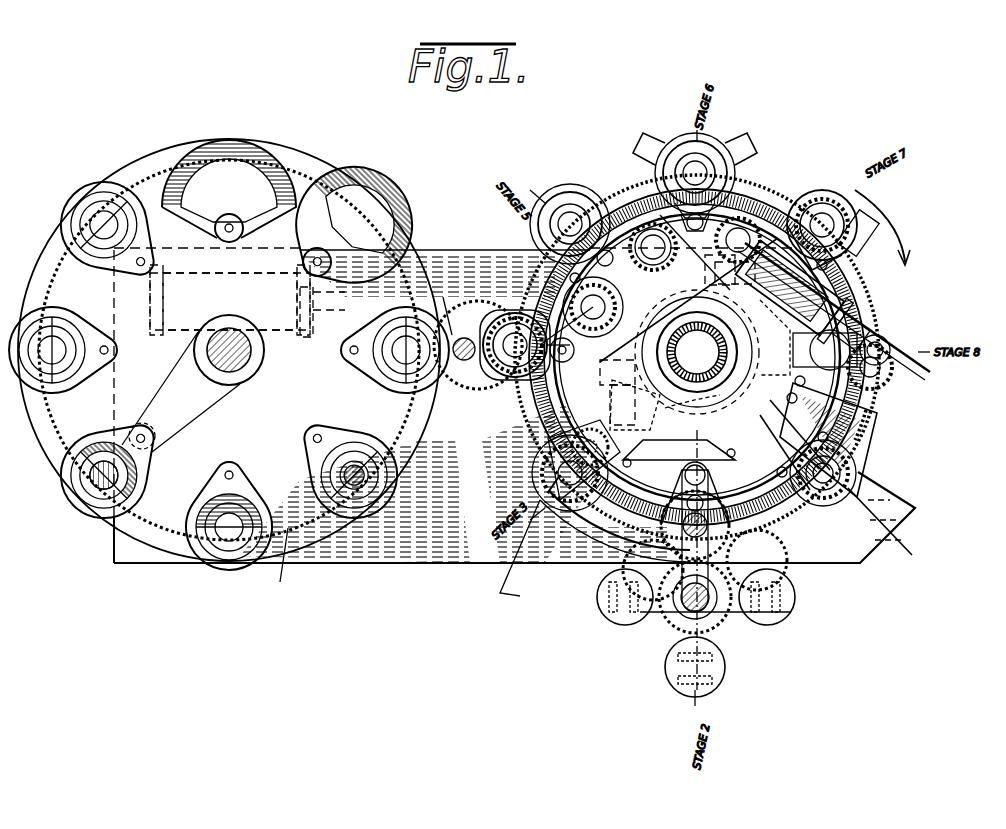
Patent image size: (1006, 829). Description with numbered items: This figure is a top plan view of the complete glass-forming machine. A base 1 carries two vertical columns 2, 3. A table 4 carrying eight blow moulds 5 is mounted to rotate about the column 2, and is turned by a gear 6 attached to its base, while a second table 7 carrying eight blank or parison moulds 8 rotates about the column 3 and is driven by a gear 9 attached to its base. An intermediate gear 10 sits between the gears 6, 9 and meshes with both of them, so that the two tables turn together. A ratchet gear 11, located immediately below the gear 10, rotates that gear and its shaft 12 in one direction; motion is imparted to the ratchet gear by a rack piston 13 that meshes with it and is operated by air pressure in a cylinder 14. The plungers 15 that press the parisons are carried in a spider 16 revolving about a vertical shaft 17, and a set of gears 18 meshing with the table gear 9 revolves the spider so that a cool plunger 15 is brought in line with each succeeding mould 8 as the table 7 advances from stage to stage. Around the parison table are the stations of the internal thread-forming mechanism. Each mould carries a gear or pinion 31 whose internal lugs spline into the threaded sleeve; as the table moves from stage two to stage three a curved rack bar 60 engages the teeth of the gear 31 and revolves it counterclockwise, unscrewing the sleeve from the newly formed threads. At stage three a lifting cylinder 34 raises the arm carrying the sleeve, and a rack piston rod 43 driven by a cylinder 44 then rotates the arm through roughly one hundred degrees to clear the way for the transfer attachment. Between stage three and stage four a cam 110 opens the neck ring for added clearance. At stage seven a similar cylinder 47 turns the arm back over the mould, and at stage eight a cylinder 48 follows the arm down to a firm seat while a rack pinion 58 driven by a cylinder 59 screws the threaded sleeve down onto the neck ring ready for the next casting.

The base 1 is at (437, 540).
The vertical column 2 is at (256, 357).
The vertical column 3 is at (714, 340).
The table 4 is at (147, 152).
The blow moulds 5 is at (95, 195).
The gear 6 is at (280, 582).
The table 7 is at (812, 402).
The parison moulds 8 is at (575, 195).
The gear 9 is at (836, 432).
The intermediate gear 10 is at (500, 300).
The ratchet gear 11 is at (480, 372).
The shaft 12 is at (478, 380).
The rack piston 13 is at (443, 297).
The cylinder 14 is at (178, 338).
The plunger 15 is at (605, 610).
The spider 16 is at (690, 628).
The vertical shaft 17 is at (713, 605).
The set of gears 18 is at (650, 605).
The gear or pinion 31 is at (640, 270).
The lifting cylinder 34 is at (580, 437).
The rack piston rod 43 is at (641, 413).
The cylinder 44 is at (692, 401).
The cylinder 47 is at (659, 288).
The cylinder 48 is at (862, 408).
The rack pinion 58 is at (930, 373).
The cylinder 59 is at (850, 298).
The curved rack bar 60 is at (595, 543).
The cam 110 is at (775, 339).